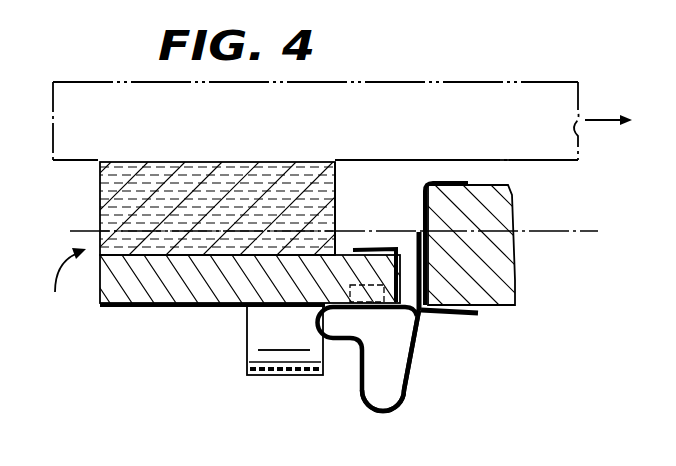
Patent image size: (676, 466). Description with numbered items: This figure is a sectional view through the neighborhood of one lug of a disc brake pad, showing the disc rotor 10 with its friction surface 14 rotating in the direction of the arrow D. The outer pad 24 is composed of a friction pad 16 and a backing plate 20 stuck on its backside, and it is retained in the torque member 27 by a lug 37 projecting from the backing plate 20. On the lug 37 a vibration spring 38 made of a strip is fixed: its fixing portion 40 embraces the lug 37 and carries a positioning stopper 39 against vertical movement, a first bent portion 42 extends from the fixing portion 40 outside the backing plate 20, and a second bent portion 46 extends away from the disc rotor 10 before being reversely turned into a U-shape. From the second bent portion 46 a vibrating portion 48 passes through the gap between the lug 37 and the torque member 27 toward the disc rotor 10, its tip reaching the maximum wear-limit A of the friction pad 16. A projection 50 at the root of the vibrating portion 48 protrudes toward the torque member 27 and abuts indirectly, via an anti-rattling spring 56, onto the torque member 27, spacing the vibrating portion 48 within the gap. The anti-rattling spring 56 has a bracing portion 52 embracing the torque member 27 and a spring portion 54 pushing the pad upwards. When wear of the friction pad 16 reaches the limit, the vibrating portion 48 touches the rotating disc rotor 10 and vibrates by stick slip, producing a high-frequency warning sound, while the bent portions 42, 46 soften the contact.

The disc rotor 10 is at (570, 133).
The friction surface 14 is at (535, 163).
The friction pad 16 is at (163, 170).
The backing plate 20 is at (182, 294).
The outer pad 24 is at (64, 286).
The torque member 27 is at (505, 280).
The lug 37 is at (345, 257).
The vibration spring 38 is at (350, 378).
The positioning stopper 39 is at (368, 297).
The fixing portion 40 is at (388, 252).
The first bent portion 42 is at (312, 323).
The second bent portion 46 is at (388, 407).
The vibrating portion 48 is at (410, 232).
The projection 50 is at (412, 337).
The bracing portion 52 is at (455, 318).
The spring portion 54 is at (257, 346).
The anti-rattling spring 56 is at (437, 204).
The maximum wear-limit A is at (557, 233).
The arrow indicating rotation direction D is at (620, 120).